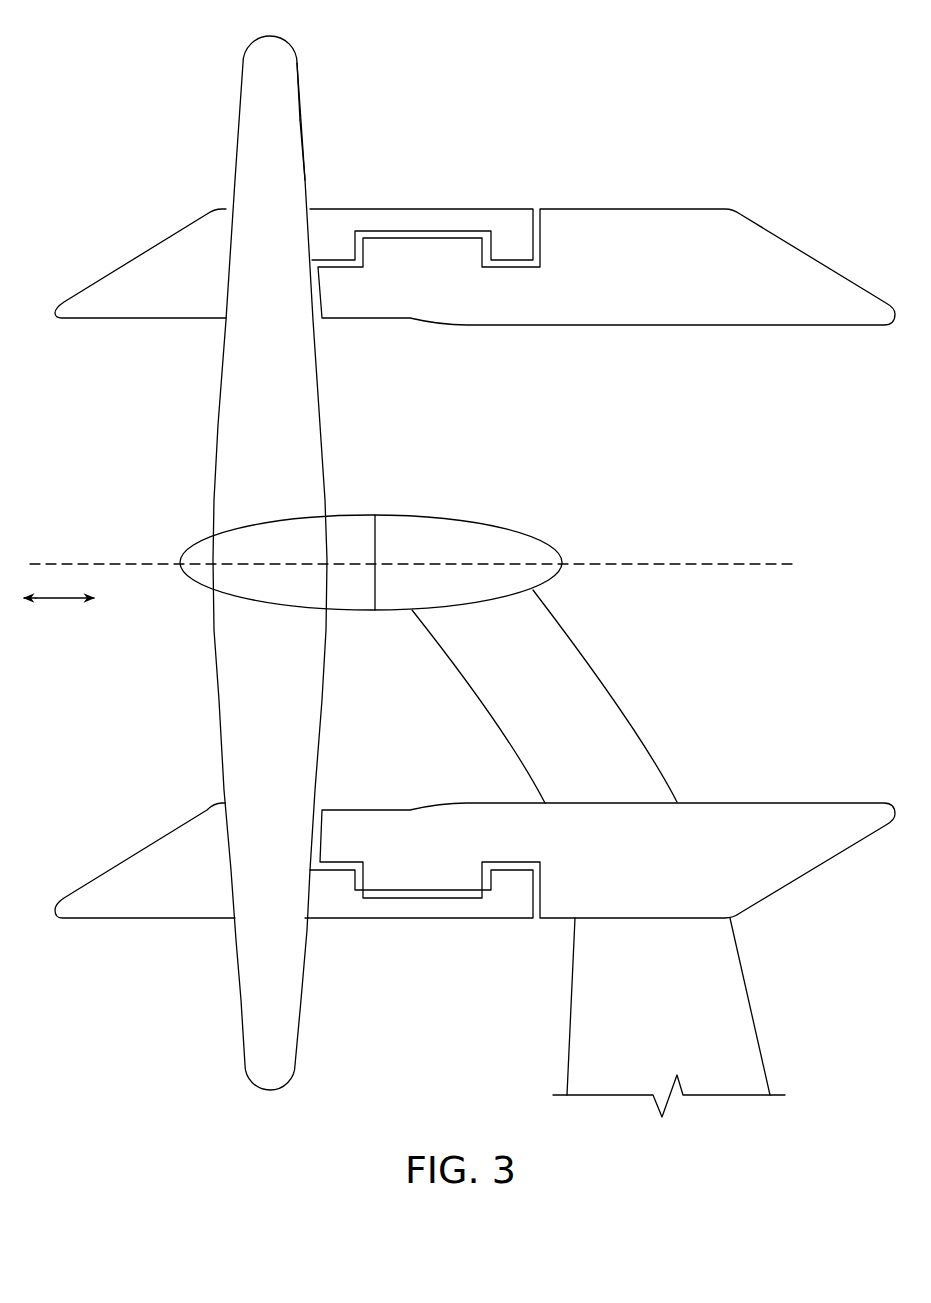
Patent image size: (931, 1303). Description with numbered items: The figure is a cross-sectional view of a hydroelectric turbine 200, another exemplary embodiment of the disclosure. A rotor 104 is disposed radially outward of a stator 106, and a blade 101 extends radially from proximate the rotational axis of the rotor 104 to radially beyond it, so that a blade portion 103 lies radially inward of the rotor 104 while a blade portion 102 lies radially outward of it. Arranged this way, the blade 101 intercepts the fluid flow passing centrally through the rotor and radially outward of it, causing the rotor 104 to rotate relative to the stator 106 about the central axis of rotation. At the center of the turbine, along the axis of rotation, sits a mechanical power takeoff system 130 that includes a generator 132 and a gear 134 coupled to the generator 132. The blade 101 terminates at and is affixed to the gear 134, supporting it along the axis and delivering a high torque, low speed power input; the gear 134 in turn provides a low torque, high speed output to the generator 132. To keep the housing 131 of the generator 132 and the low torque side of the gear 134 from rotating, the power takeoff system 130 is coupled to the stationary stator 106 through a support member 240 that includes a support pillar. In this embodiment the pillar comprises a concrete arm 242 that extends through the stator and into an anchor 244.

The hydroelectric turbine 200 is at (162, 72).
The blade 101 is at (280, 83).
The blade portion 102 is at (285, 146).
The blade portion 103 is at (247, 424).
The rotor 104 is at (513, 218).
The stator 106 is at (720, 227).
The mechanical power takeoff system 130 is at (401, 460).
The housing 131 is at (552, 578).
The generator 132 is at (483, 540).
The gear 134 is at (327, 588).
The support member 240 is at (720, 756).
The concrete arm 242 is at (570, 680).
The anchor 244 is at (735, 1020).